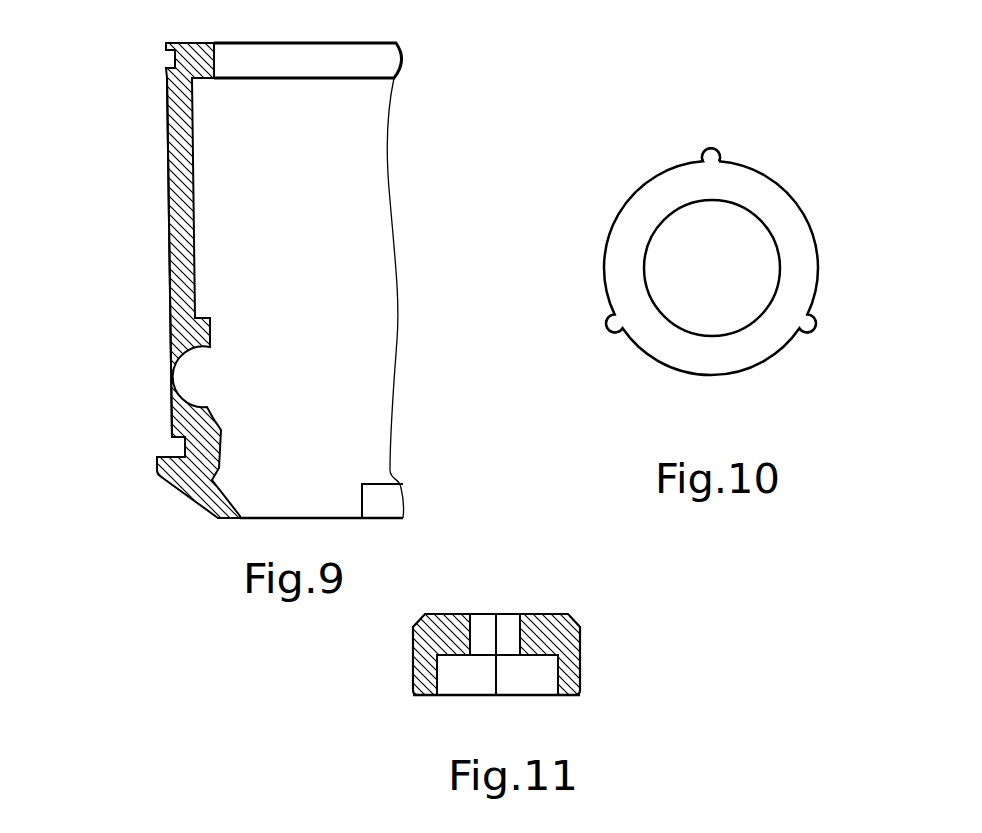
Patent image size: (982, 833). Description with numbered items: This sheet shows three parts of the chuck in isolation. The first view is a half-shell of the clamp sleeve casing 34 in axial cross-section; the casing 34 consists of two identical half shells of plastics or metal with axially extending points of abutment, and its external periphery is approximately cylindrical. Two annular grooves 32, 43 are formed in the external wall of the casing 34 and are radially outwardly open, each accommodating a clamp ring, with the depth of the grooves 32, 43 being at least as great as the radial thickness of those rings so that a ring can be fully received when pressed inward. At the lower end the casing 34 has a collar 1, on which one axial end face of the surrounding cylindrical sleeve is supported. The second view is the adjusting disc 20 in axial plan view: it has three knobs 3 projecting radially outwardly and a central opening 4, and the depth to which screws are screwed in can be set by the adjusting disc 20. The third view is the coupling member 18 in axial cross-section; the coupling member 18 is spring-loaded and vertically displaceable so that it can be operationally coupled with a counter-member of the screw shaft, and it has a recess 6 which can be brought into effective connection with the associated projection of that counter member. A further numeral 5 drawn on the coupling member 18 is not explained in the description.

In FIG. 9, the collar 1 is at (158, 472).
In FIG. 9, the annular groove 32 is at (173, 63).
In FIG. 9, the clamp sleeve casing 34 is at (168, 240).
In FIG. 9, the annular groove 43 is at (177, 447).
In FIG. 10, the adjusting disc 20 is at (635, 210).
In FIG. 10, the knobs 3 is at (710, 155).
In FIG. 10, the central opening 4 is at (735, 242).
In FIG. 11, the coupling member 18 is at (547, 647).
In FIG. 11, the slot 5 is at (510, 627).
In FIG. 11, the recess 6 is at (477, 684).